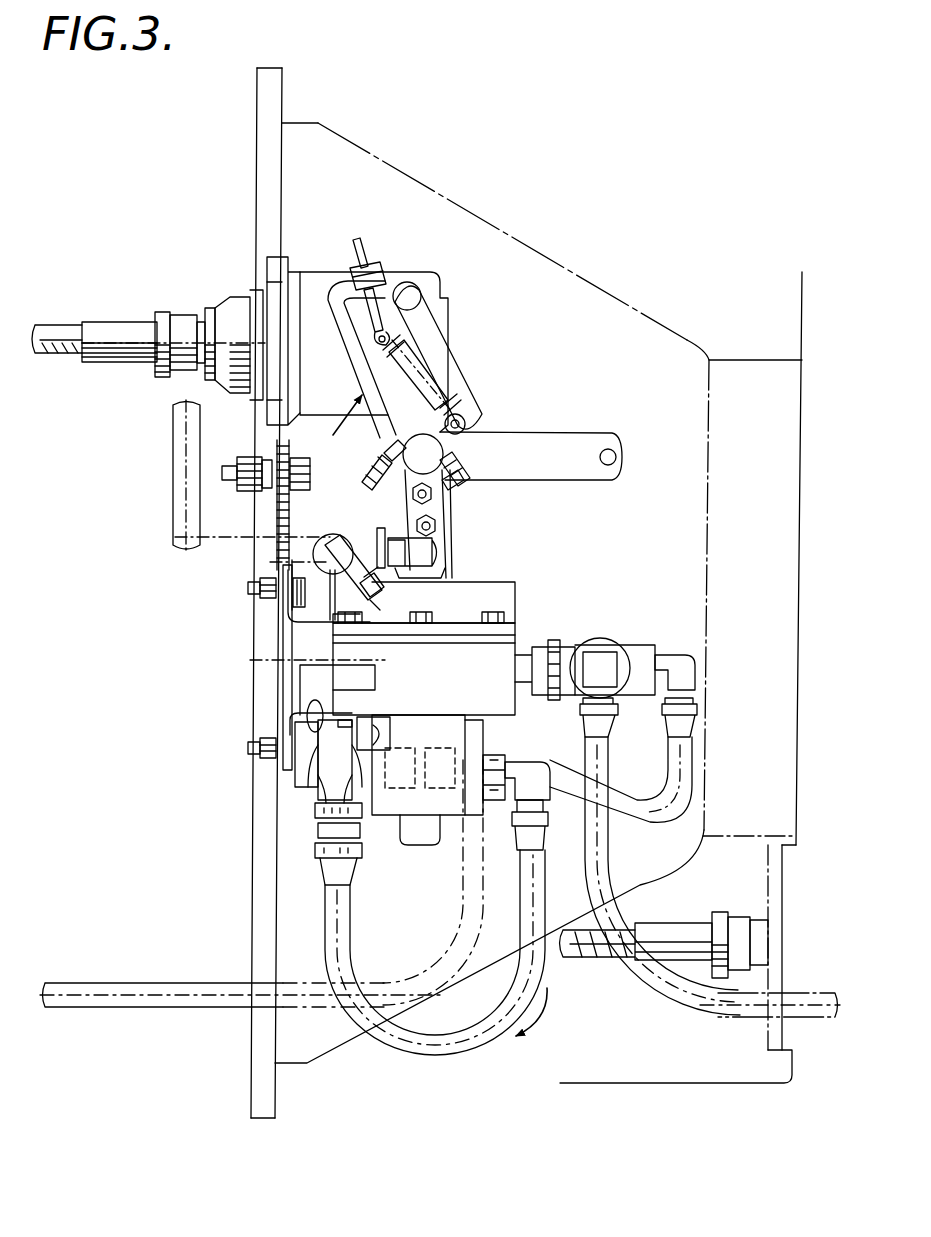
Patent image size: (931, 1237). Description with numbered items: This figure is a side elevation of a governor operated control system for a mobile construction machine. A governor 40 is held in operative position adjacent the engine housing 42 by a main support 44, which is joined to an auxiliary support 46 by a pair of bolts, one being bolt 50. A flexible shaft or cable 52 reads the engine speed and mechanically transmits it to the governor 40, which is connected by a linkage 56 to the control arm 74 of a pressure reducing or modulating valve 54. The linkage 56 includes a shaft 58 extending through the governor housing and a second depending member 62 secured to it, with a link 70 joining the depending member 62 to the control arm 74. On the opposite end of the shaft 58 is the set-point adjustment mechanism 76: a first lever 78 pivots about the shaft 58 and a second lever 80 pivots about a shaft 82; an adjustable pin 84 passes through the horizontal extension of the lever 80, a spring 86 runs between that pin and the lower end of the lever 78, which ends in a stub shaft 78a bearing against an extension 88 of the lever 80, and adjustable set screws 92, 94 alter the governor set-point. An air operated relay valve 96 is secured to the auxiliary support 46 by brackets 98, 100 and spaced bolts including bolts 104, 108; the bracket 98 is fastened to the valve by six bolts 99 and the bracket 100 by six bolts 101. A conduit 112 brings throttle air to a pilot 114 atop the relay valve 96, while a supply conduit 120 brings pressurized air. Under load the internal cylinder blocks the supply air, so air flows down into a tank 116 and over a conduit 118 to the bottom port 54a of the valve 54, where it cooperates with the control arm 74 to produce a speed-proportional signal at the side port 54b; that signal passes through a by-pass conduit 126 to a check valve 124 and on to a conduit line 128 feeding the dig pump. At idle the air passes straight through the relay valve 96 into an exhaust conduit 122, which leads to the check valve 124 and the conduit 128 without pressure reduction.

The governor 40 is at (450, 293).
The housing 42 is at (828, 928).
The main support 44 is at (270, 283).
The auxiliary support 46 is at (283, 685).
The bolt 50 is at (250, 465).
The flexible shaft or cable 52 is at (78, 340).
The pressure reducing or modulating valve 54 is at (350, 797).
The bottom port 54a is at (322, 792).
The side port 54b is at (370, 783).
The linkage 56 is at (322, 635).
The shaft 58 is at (407, 296).
The second depending member 62 is at (442, 540).
The link 70 is at (342, 546).
The control arm 74 is at (370, 596).
The adjustment mechanism 76 is at (331, 423).
The first lever 78 is at (468, 397).
The stub shaft 78a is at (470, 430).
The second lever 80 is at (362, 352).
The shaft 82 is at (440, 470).
The adjustable pin 84 is at (364, 248).
The spring 86 is at (437, 376).
The extension 88 is at (470, 440).
The adjustable set screw 92 is at (462, 465).
The adjustable set screw 94 is at (384, 480).
The air operated relay valve 96 is at (488, 688).
The bracket 98 is at (293, 625).
The bolts 99 is at (427, 620).
The bracket 100 is at (348, 716).
The bolts 101 is at (508, 722).
The bolt 104 is at (262, 598).
The bolt 108 is at (262, 758).
The conduit 112 is at (182, 478).
The pilot 114 is at (450, 602).
The tank 116 is at (538, 790).
The conduit 118 is at (458, 1042).
The supply conduit 120 is at (118, 1010).
The exhaust conduit 122 is at (525, 662).
The check valve 124 is at (637, 660).
The by-pass conduit 126 is at (695, 779).
The conduit line 128 is at (810, 1012).